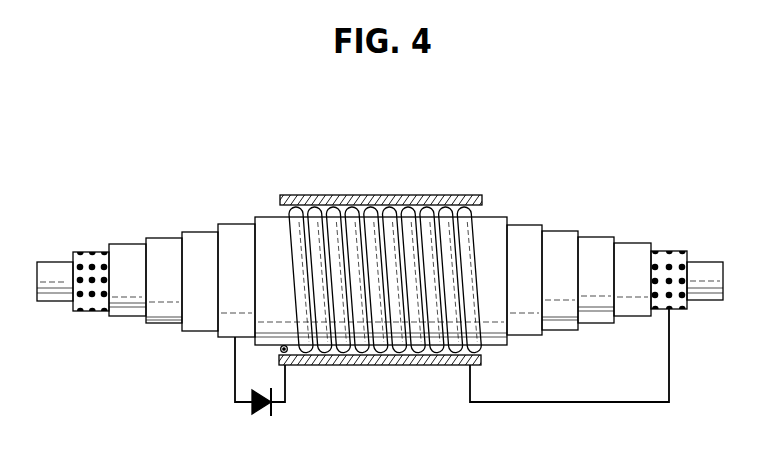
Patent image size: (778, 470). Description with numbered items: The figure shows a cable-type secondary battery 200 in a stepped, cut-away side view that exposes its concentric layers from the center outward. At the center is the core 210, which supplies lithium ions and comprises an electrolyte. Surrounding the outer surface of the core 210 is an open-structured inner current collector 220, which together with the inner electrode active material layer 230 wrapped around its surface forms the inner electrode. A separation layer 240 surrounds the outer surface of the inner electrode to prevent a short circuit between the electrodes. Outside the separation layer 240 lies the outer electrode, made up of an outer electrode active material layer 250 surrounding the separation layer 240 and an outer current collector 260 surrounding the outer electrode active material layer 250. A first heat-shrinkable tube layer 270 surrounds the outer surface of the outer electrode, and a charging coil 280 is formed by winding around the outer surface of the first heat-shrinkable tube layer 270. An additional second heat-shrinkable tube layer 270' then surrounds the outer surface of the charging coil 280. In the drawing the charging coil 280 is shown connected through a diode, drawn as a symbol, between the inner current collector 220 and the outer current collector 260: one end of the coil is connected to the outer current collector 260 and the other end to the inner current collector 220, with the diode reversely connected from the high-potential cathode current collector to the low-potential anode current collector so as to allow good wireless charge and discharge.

The cable-type secondary battery 200 is at (206, 161).
The core 210 is at (55, 262).
The inner current collector 220 is at (92, 252).
The inner electrode active material layer 230 is at (128, 244).
The separation layer 240 is at (163, 238).
The outer electrode active material layer 250 is at (199, 232).
The outer current collector 260 is at (237, 224).
The first heat-shrinkable tube layer 270 is at (487, 264).
The second heat-shrinkable tube layer 270' is at (380, 263).
The charging coil 280 is at (405, 210).